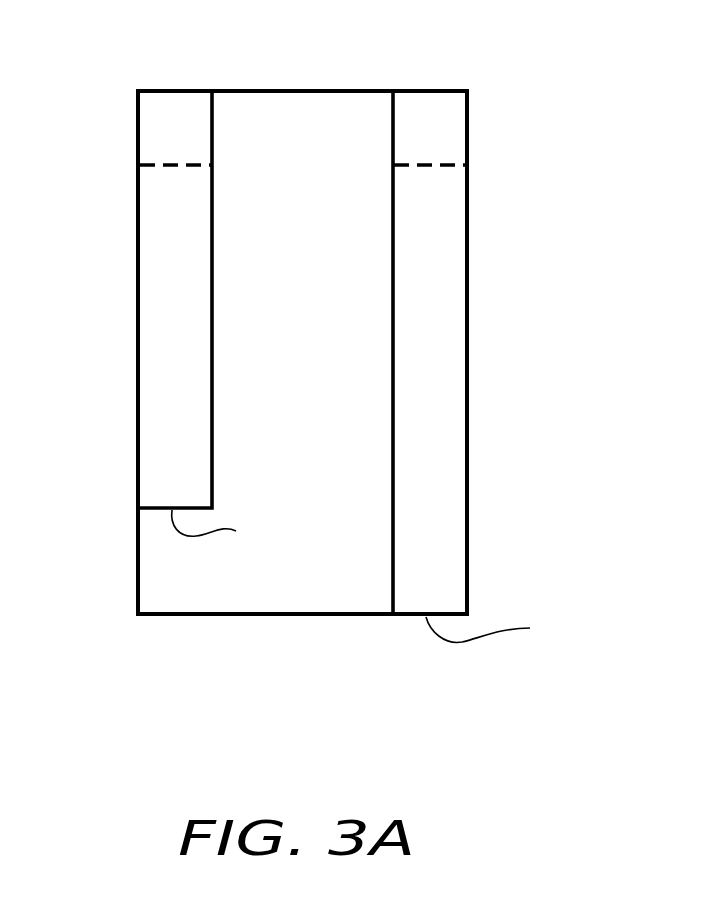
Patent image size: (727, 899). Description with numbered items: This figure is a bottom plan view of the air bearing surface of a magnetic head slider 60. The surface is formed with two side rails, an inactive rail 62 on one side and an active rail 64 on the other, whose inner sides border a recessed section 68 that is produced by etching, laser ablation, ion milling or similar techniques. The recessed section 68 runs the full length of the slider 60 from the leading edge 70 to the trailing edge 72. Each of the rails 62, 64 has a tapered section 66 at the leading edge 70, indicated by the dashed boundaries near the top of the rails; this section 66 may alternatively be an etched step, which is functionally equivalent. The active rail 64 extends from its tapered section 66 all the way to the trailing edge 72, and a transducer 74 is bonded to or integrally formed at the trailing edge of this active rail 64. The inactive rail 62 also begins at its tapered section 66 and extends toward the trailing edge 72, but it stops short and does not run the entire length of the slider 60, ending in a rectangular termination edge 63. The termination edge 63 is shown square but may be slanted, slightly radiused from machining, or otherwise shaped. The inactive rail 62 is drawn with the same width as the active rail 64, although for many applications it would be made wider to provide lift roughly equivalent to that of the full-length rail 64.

The magnetic head slider 60 is at (114, 538).
The inactive rail 62 is at (157, 407).
The termination edge 63 is at (224, 531).
The active rail 64 is at (450, 411).
The tapered section 66 is at (156, 122).
The recessed section 68 is at (322, 306).
The leading edge 70 is at (266, 90).
The trailing edge 72 is at (298, 616).
The transducer 74 is at (473, 649).